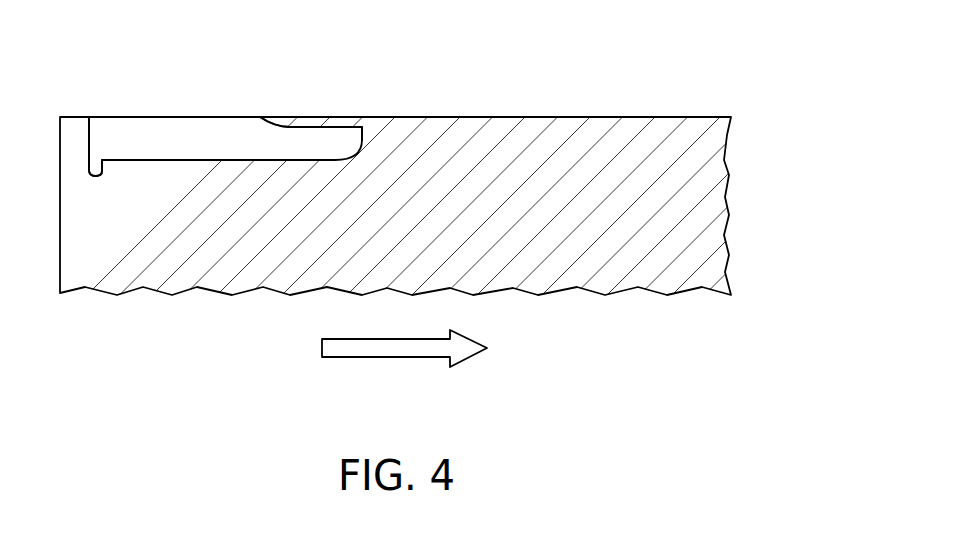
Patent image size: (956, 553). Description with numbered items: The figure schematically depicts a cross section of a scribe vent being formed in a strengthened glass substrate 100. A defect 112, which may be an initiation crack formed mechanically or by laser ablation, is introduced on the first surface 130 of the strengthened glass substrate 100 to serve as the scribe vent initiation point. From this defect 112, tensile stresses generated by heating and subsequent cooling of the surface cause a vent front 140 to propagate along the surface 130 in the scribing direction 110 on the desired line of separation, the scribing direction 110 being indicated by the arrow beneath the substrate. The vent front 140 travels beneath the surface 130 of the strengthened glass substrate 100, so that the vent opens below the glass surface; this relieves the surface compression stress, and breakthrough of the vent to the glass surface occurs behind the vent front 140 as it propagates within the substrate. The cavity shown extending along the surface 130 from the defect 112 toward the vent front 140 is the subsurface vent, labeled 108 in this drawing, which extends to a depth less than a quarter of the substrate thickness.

The strengthened glass substrate 100 is at (478, 210).
The slot / cavity 108 is at (242, 137).
The scribing direction 110 is at (397, 359).
The defect 112 is at (96, 117).
The first surface 130 is at (590, 117).
The vent front 140 is at (363, 131).